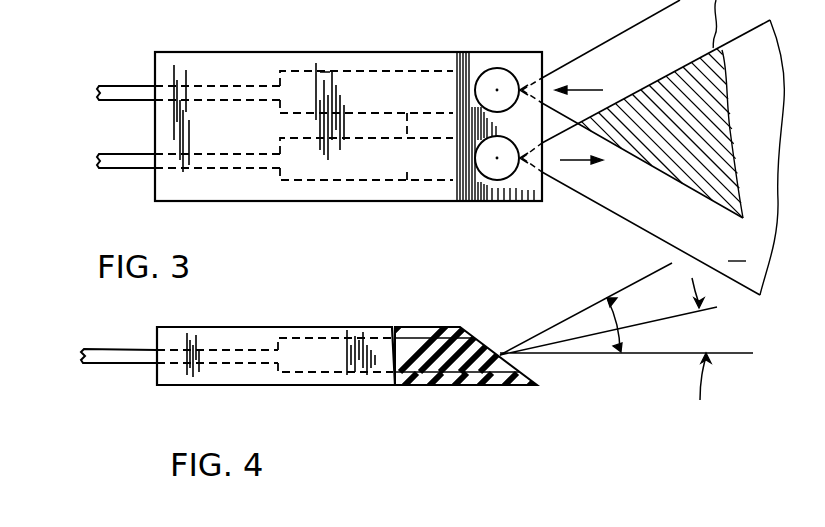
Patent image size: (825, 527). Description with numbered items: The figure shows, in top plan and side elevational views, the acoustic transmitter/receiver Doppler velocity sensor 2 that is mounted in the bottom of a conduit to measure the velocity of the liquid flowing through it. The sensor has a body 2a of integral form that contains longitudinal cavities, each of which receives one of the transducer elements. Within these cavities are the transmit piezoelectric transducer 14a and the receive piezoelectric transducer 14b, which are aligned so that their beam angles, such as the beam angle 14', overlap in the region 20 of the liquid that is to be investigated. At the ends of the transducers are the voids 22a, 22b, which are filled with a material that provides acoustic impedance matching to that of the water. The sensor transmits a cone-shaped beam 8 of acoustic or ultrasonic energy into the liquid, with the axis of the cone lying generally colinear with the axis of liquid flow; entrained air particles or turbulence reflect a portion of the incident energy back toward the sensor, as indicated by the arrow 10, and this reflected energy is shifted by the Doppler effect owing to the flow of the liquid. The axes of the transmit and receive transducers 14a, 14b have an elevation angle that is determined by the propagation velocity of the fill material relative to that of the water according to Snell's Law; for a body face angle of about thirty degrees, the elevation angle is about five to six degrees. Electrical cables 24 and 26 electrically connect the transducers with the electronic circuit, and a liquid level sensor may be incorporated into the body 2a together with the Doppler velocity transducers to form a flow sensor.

In FIG. 3, the Doppler velocity sensor 2 is at (422, 202).
In FIG. 4, the Doppler velocity sensor 2 is at (253, 326).
In FIG. 3, the body 2a is at (248, 184).
In FIG. 4, the body 2a is at (238, 376).
In FIG. 3, the beam 8 is at (572, 163).
In FIG. 3, the arrow 10 is at (573, 90).
In FIG. 3, the transmit piezoelectric transducer 14a is at (344, 174).
In FIG. 4, the transmit piezoelectric transducer 14a is at (378, 357).
In FIG. 3, the receive piezoelectric transducer 14b is at (326, 74).
In FIG. 4, the beam angle 14' is at (586, 279).
In FIG. 3, the region 20 is at (690, 131).
In FIG. 3, the void 22a is at (497, 170).
In FIG. 4, the void 22a is at (432, 352).
In FIG. 3, the void 22b is at (495, 80).
In FIG. 3, the electrical cable 24 is at (134, 163).
In FIG. 4, the electrical cable 24 is at (128, 356).
In FIG. 3, the electrical cable 26 is at (133, 94).